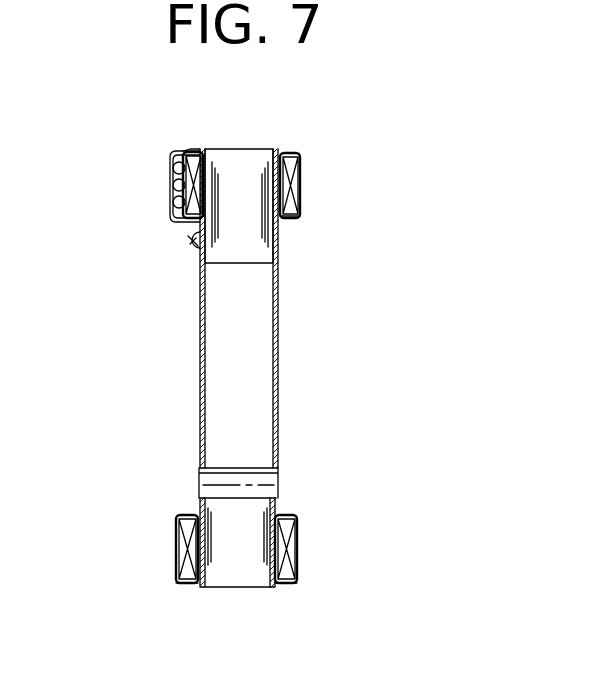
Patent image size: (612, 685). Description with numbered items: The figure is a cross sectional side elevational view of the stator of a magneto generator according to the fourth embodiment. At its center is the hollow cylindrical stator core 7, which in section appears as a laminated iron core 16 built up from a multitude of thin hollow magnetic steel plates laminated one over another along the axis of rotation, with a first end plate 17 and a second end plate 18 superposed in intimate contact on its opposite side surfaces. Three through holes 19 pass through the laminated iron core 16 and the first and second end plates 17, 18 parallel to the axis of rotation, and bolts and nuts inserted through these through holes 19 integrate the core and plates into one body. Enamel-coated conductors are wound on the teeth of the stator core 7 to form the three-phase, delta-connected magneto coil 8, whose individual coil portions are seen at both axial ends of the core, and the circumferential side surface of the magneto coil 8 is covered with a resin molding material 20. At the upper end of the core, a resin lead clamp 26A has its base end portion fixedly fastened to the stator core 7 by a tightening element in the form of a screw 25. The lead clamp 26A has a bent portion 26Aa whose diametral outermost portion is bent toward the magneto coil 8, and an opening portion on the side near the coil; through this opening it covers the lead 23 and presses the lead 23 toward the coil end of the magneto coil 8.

The stator core 7 is at (290, 245).
The magneto coil 8 is at (300, 173).
The laminated iron core 16 is at (243, 572).
The first end plate 17 is at (193, 587).
The second end plate 18 is at (288, 587).
The through holes 19 is at (213, 482).
The resin molding material 20 is at (300, 205).
The lead 23 is at (175, 170).
The screw 25 is at (188, 240).
The lead clamp 26A is at (172, 193).
The bent portion 26Aa is at (185, 153).